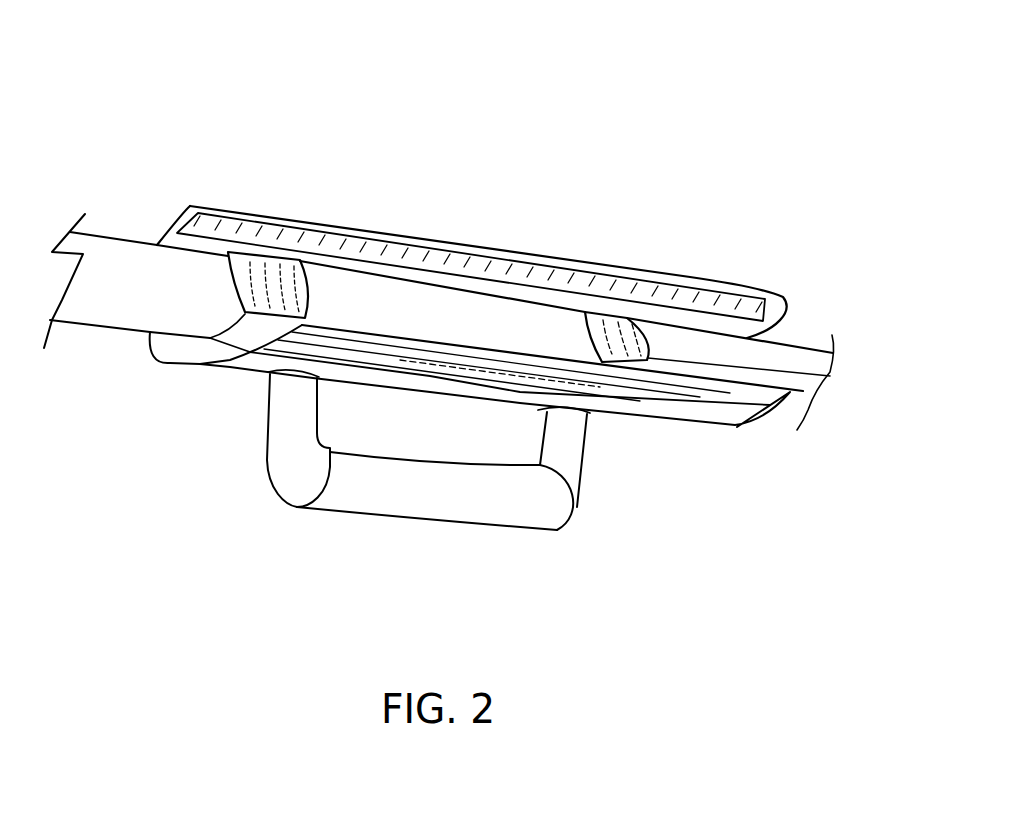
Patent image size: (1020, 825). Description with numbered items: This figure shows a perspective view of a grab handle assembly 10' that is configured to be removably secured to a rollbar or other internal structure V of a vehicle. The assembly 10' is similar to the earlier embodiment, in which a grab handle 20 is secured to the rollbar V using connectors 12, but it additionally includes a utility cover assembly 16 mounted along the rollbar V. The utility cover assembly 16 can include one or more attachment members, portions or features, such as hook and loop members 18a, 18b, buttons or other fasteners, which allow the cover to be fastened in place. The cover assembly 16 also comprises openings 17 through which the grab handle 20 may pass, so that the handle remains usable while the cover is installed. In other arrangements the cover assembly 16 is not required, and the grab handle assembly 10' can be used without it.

The grab handle assembly 10' is at (475, 301).
The connector 12 is at (830, 376).
The utility cover assembly 16 is at (687, 418).
The opening 17 is at (590, 413).
The hook and loop member 18a is at (705, 297).
The hook and loop member 18b is at (741, 398).
The grab handle 20 is at (543, 500).
The rollbar or other internal structure of a vehicle V is at (92, 313).